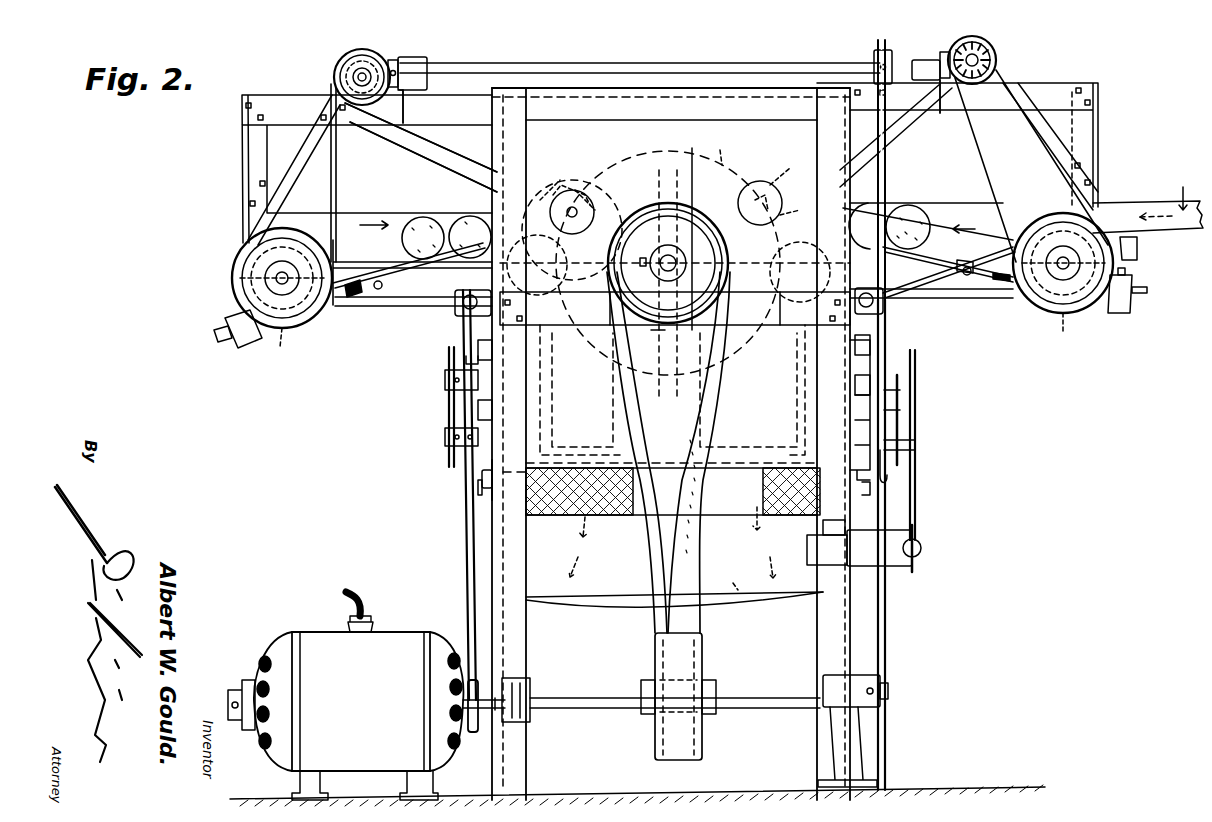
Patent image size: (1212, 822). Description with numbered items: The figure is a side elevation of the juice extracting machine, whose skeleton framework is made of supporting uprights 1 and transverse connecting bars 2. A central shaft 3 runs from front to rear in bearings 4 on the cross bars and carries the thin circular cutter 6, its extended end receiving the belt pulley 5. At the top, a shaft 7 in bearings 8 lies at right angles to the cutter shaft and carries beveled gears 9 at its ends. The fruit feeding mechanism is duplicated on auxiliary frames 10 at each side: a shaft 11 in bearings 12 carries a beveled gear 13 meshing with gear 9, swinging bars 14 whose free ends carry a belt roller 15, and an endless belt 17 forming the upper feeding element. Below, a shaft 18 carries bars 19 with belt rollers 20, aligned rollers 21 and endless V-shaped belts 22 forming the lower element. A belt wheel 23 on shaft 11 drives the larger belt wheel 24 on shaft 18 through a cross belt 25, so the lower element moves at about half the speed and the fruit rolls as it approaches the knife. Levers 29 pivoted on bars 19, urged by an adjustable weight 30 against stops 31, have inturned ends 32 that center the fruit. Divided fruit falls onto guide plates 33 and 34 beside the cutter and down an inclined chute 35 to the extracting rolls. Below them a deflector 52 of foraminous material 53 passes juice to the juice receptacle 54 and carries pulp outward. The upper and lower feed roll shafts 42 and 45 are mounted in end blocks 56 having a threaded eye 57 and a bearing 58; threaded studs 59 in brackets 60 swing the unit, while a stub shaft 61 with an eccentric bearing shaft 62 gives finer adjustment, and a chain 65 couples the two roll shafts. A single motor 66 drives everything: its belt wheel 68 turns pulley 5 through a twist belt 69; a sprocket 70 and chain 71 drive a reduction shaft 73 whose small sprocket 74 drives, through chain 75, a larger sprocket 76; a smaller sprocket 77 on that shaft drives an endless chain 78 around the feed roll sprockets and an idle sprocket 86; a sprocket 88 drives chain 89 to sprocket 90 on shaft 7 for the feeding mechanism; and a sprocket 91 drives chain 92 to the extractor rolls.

The supporting uprights 1 is at (528, 667).
The transverse connecting bars 2 is at (585, 325).
The shaft 3 is at (667, 254).
The bearings 4 is at (667, 326).
The belt pulley 5 is at (662, 206).
The cutter 6 is at (653, 157).
The shaft 7 is at (712, 68).
The bearings 8 is at (423, 63).
The beveled gears 9 is at (391, 62).
The auxiliary frames 10 is at (244, 168).
The shaft 11 is at (365, 64).
The bearings 12 is at (332, 88).
The beveled gear 13 is at (353, 60).
The bars 14 is at (440, 126).
The belt roller 15 is at (590, 195).
The endless belt 17 is at (463, 170).
The shaft 18 is at (240, 272).
The bars 19 is at (402, 307).
The belt rollers 20 is at (545, 330).
The belt rollers 21 is at (280, 348).
The endless V-shaped belts 22 is at (368, 262).
The belt wheel 23 is at (340, 60).
The belt wheel 24 is at (265, 282).
The cross belt 25 is at (337, 166).
The levers 29 is at (345, 300).
The adjustable weight 30 is at (245, 347).
The stops 31 is at (358, 300).
The inturned ends 32 is at (470, 258).
The guide plate 33 is at (723, 162).
The guide plate 34 is at (600, 232).
The inclined chute 35 is at (591, 438).
The shaft 42 is at (445, 379).
The shaft 45 is at (445, 441).
The deflector 52 is at (735, 592).
The foraminous material 53 is at (606, 517).
The juice receptacle 54 is at (607, 610).
The end frames or blocks 56 is at (492, 411).
The threaded eye 57 is at (462, 359).
The bearing 58 is at (488, 496).
The threaded studs 59 is at (490, 368).
The brackets 60 is at (482, 318).
The stub shaft 61 is at (478, 489).
The bearing shaft 62 is at (482, 479).
The chain 65 is at (452, 416).
The motor 66 is at (358, 697).
The belt wheel 68 is at (706, 742).
The twist belt 69 is at (712, 412).
The sprocket 70 is at (885, 706).
The chain 71 is at (886, 634).
The shaft 73 is at (922, 546).
The small sprocket 74 is at (918, 567).
The chain 75 is at (918, 504).
The sprocket 76 is at (920, 357).
The sprocket 77 is at (915, 454).
The endless chain 78 is at (902, 411).
The idle sprocket 86 is at (900, 381).
The sprocket 88 is at (894, 474).
The chain 89 is at (886, 184).
The sprocket 90 is at (876, 48).
The sprocket 91 is at (478, 682).
The chain 92 is at (466, 552).